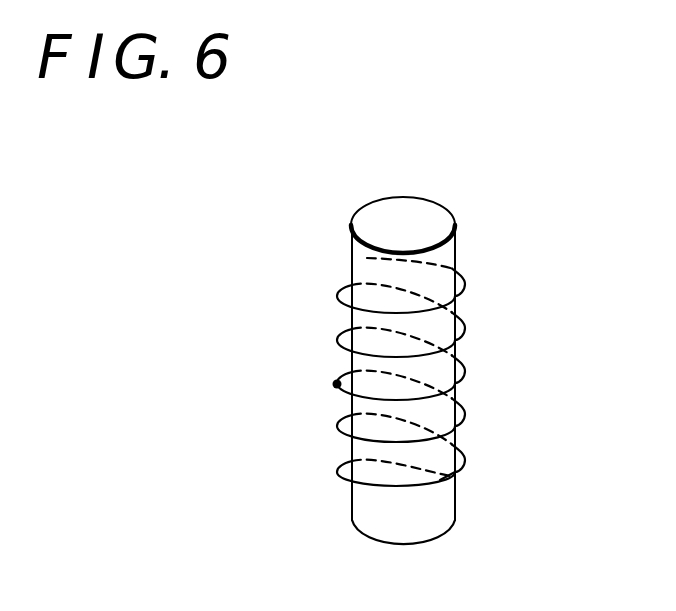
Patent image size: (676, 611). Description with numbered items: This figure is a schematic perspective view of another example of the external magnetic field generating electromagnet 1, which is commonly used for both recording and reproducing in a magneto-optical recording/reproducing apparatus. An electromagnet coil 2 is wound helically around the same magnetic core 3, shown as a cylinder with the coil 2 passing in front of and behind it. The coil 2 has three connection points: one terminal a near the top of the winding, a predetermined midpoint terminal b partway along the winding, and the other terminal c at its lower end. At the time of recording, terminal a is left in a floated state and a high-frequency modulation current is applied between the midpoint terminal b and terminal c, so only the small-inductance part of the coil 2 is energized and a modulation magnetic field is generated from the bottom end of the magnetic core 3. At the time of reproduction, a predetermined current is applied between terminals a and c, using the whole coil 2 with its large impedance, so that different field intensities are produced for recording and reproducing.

The external magnetic field generating electromagnet 1 is at (538, 194).
The electromagnet coil 2 is at (463, 412).
The magnetic core 3 is at (445, 512).
The terminal a is at (363, 258).
The midpoint terminal b is at (334, 385).
The terminal c is at (450, 474).